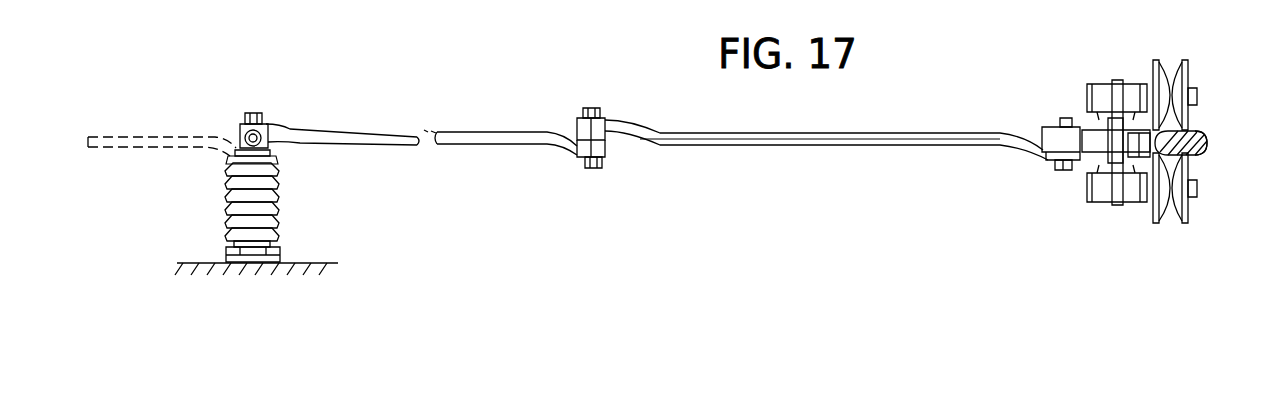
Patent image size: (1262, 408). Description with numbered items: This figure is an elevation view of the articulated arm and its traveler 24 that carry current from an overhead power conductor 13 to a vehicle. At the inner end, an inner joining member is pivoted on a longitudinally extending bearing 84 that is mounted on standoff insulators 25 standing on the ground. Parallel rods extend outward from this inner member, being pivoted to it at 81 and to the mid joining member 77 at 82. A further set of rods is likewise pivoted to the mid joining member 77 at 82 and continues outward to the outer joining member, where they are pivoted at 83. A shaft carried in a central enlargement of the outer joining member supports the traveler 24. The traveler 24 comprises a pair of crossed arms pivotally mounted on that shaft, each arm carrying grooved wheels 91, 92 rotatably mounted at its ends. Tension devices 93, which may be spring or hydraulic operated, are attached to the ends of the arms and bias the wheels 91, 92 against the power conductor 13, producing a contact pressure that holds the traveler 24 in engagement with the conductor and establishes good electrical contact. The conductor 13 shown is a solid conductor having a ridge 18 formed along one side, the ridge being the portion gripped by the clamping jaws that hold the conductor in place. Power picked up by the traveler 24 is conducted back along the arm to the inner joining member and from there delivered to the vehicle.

The conductor 13 is at (1187, 132).
The ridge 18 is at (1208, 146).
The traveler 24 is at (1135, 62).
The standoff insulators 25 is at (283, 210).
The mid joining member 77 is at (575, 137).
The pivot 81 is at (252, 113).
The pivot 82 is at (596, 108).
The pivot 83 is at (1064, 118).
The bearing 84 is at (242, 140).
The grooved wheel 91 is at (1170, 78).
The grooved wheel 92 is at (1183, 208).
The tension device 93 is at (1113, 143).